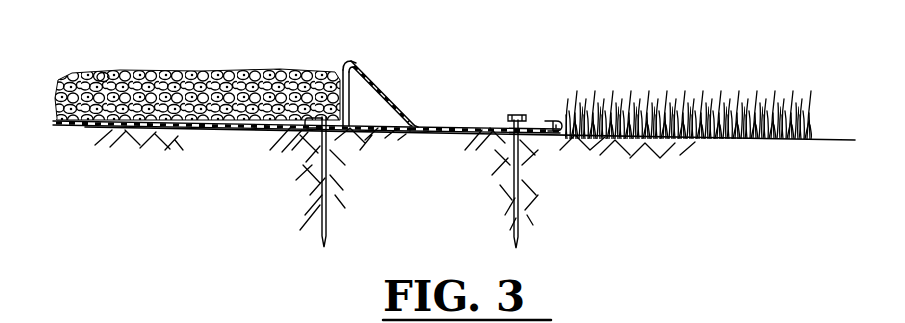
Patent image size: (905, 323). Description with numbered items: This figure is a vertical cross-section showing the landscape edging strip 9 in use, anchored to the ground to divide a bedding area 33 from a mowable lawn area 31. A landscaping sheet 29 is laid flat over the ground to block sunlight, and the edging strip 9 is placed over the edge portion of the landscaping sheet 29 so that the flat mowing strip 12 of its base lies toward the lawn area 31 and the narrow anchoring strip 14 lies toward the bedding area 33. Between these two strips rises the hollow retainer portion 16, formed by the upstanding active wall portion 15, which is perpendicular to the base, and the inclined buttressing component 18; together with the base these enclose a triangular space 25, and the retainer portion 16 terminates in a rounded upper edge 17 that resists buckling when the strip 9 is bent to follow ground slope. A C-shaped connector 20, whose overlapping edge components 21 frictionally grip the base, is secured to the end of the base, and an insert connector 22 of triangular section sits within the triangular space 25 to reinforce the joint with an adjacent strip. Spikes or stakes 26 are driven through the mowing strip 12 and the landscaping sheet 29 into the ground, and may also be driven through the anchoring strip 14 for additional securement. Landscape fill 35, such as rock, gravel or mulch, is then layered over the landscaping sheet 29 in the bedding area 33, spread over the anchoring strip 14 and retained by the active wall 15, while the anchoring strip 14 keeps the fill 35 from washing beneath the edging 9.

The landscape edging strip 9 is at (405, 72).
The mowing strip 12 is at (453, 124).
The anchoring strip 14 is at (331, 130).
The active wall portion 15 is at (340, 72).
The retainer portion 16 is at (365, 72).
The upper edge 17 is at (347, 59).
The buttressing component 18 is at (398, 107).
The C-shaped connector 20 is at (480, 124).
The overlapping edge component 21 is at (553, 120).
The insert connector 22 is at (384, 89).
The enclosed space 25 is at (358, 95).
The spikes or stakes 26 is at (436, 182).
The landscaping sheet 29 is at (235, 128).
The mowable lawn area 31 is at (690, 83).
The bedding area 33 is at (197, 65).
The landscape fill 35 is at (103, 72).